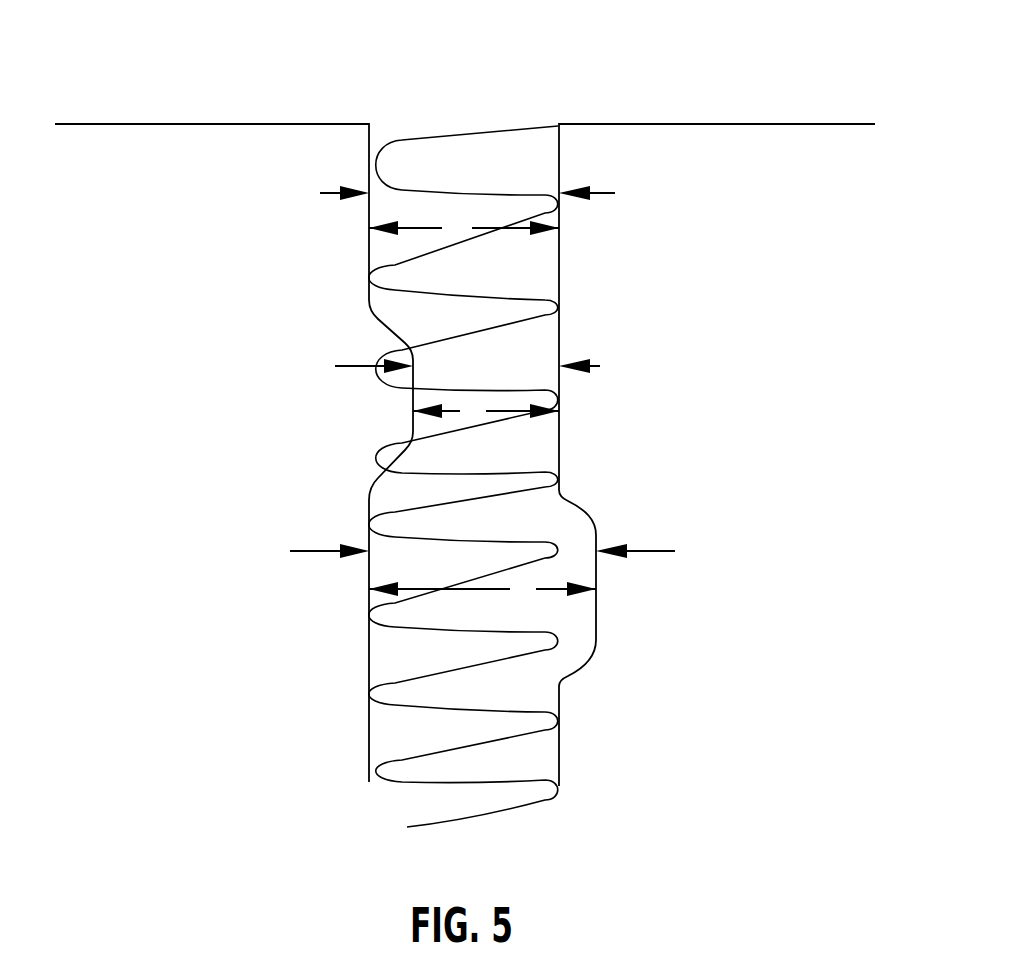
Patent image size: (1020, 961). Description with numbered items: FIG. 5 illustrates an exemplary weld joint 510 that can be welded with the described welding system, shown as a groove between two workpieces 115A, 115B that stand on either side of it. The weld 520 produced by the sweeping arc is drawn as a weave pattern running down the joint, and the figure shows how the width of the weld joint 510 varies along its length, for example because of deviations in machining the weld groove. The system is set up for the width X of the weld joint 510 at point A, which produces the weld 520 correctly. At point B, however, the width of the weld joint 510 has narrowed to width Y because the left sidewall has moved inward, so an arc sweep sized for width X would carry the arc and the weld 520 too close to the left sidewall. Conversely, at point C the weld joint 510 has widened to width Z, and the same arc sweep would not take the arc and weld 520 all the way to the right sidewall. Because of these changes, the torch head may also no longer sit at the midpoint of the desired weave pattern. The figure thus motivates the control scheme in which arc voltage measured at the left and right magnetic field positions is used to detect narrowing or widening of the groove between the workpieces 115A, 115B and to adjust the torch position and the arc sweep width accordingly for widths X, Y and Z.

The weld joint 510 is at (465, 394).
The weld 520 is at (437, 134).
The workpiece 115A is at (234, 453).
The workpiece 115B is at (717, 455).
The point A is at (323, 193).
The point B is at (345, 366).
The point C is at (300, 551).
The width X is at (464, 229).
The width Y is at (486, 412).
The width Z is at (482, 590).